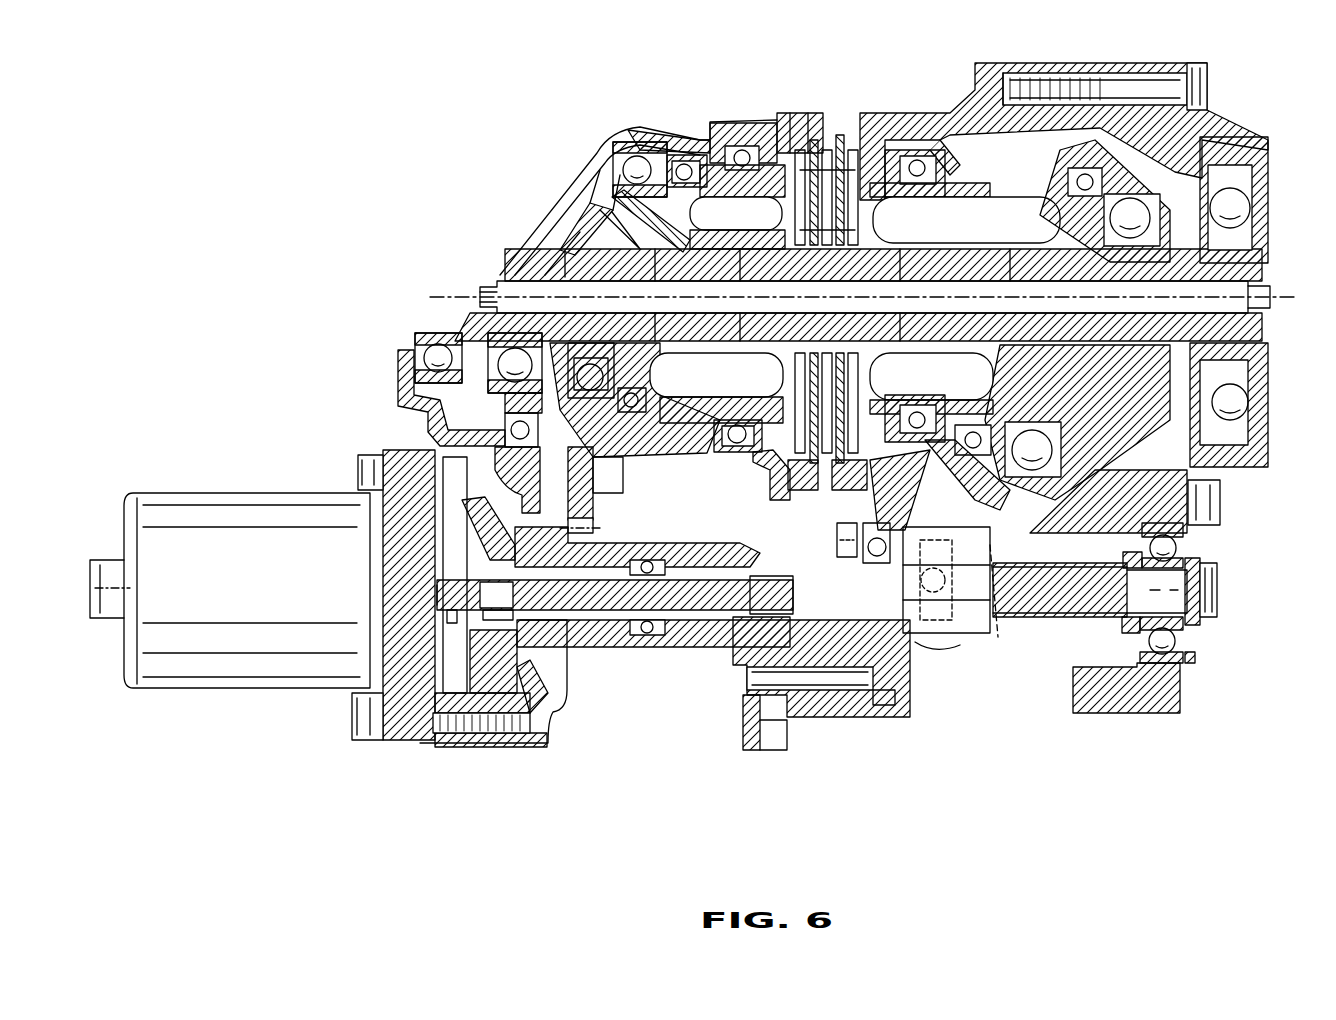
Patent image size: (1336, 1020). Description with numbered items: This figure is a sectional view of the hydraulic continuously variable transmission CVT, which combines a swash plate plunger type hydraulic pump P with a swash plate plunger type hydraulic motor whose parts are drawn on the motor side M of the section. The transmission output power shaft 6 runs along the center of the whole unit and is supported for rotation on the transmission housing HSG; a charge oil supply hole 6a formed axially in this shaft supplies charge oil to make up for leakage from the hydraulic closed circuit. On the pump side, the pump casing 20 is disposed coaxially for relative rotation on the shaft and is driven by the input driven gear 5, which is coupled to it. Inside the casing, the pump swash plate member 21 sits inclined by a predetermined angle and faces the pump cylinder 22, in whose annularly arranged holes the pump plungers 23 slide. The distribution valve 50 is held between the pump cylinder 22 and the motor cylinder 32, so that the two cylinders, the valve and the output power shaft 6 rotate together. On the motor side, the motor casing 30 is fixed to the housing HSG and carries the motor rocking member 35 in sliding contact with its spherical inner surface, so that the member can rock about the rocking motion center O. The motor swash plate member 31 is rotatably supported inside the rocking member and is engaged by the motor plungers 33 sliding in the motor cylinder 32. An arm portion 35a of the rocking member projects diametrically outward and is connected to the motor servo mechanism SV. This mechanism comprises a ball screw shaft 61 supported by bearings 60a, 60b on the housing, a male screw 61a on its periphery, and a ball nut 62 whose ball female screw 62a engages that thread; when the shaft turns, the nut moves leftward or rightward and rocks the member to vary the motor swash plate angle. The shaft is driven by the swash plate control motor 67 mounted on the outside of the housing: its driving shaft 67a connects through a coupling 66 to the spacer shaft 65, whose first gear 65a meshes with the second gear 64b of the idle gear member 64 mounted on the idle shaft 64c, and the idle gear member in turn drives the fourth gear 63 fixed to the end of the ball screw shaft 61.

The hydraulic pump P is at (672, 108).
The motor side housing M is at (921, 100).
The hydraulic continuously variable transmission CVT is at (1238, 97).
The motor servo mechanism SV is at (338, 422).
The transmission output power shaft 6 is at (1268, 277).
The charge oil supply hole 6a is at (505, 275).
The rocking motion center O is at (1173, 377).
The pump casing 20 is at (747, 120).
The pump swash plate member 21 is at (663, 215).
The pump cylinder 22 is at (773, 140).
The pump plungers 23 is at (677, 378).
The motor casing 30 is at (1030, 68).
The motor swash plate member 31 is at (1007, 385).
The motor cylinder 32 is at (950, 190).
The motor plungers 33 is at (1022, 210).
The motor rocking member 35 is at (1098, 155).
The arm portion 35a is at (975, 512).
The distribution valve 50 is at (839, 107).
The input driven gear 5 is at (597, 507).
The bearing 60a is at (1185, 545).
The bearing 60b is at (867, 518).
The ball screw shaft 61 is at (1060, 605).
The male screw 61a is at (1070, 562).
The ball nut 62 is at (958, 633).
The ball female screw 62a is at (997, 637).
The fourth gear 63 is at (833, 533).
The idle gear member 64 is at (805, 703).
The second gear 64b is at (780, 743).
The idle shaft 64c is at (745, 693).
The spacer shaft 65 is at (708, 548).
The first gear 65a is at (777, 582).
The coupling 66 is at (567, 647).
The swash plate control motor 67 is at (230, 590).
The driving shaft 67a is at (555, 680).
The transmission housing HSG is at (1150, 702).